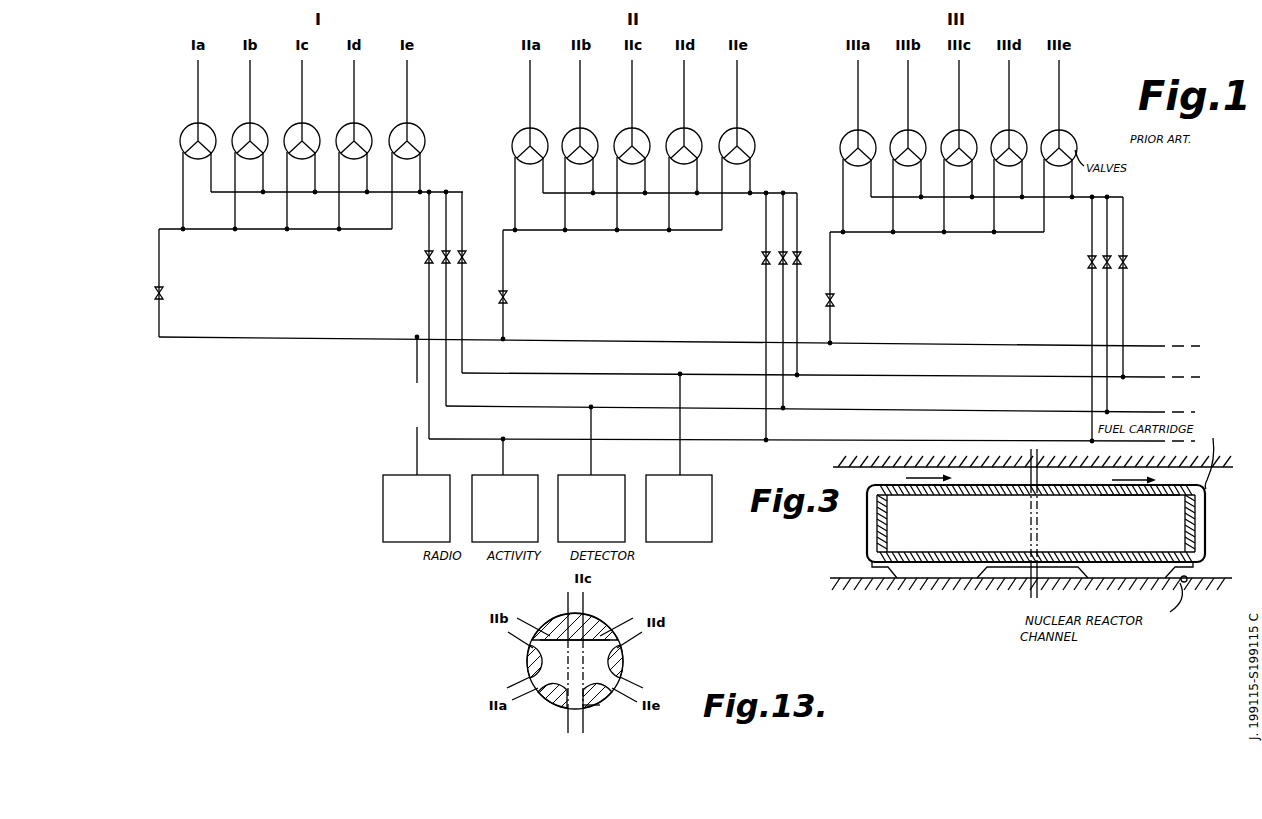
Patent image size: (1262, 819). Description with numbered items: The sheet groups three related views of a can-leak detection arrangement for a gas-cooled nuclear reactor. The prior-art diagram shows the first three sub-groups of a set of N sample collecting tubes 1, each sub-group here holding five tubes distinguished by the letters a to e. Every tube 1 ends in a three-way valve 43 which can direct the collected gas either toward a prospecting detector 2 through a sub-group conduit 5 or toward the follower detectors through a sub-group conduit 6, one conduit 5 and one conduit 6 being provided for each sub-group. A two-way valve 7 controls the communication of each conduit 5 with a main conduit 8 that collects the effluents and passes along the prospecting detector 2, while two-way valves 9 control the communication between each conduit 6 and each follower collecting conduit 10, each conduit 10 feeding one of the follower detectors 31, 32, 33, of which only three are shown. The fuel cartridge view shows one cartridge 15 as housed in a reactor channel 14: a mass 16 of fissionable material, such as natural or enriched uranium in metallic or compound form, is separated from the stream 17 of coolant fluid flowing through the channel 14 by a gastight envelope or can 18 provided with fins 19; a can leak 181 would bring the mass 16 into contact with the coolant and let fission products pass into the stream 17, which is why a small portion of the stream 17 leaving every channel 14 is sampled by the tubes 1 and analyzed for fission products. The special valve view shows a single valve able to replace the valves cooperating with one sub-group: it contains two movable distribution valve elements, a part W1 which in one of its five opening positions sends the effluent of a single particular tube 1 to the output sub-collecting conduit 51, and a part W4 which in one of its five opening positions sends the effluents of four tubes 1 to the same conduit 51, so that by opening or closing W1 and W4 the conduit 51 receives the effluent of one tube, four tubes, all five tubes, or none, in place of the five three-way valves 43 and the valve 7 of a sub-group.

In FIG. 1, the sample collecting tube 1 is at (632, 92).
In FIG. 13, the sample collecting tube 1 is at (565, 604).
In FIG. 1, the three-way valve 43 is at (569, 130).
In FIG. 1, the conduit 5 is at (530, 232).
In FIG. 1, the conduit 6 is at (556, 196).
In FIG. 1, the two-way valve 7 is at (508, 297).
In FIG. 1, the main conduit 8 is at (600, 341).
In FIG. 1, the two-way valve 9 is at (799, 252).
In FIG. 1, the follower collecting conduit 10 is at (515, 439).
In FIG. 1, the prospecting detector 2 is at (410, 515).
In FIG. 1, the follower detector 31 is at (514, 518).
In FIG. 1, the follower detector 32 is at (601, 518).
In FIG. 1, the follower detector 33 is at (688, 518).
In FIG. 3, the channel 14 is at (856, 577).
In FIG. 3, the cartridge 15 is at (1010, 568).
In FIG. 3, the mass of fissionable material 16 is at (1064, 531).
In FIG. 3, the stream of coolant fluid 17 is at (1133, 491).
In FIG. 3, the can leak 181 is at (1120, 496).
In FIG. 3, the gastight envelope or can 18 is at (1090, 556).
In FIG. 3, the fins 19 is at (931, 568).
In FIG. 13, the output sub-collecting conduit 51 is at (565, 726).
In FIG. 13, the movable distribution valve element W1 is at (590, 617).
In FIG. 13, the movable distribution valve element W4 is at (600, 694).